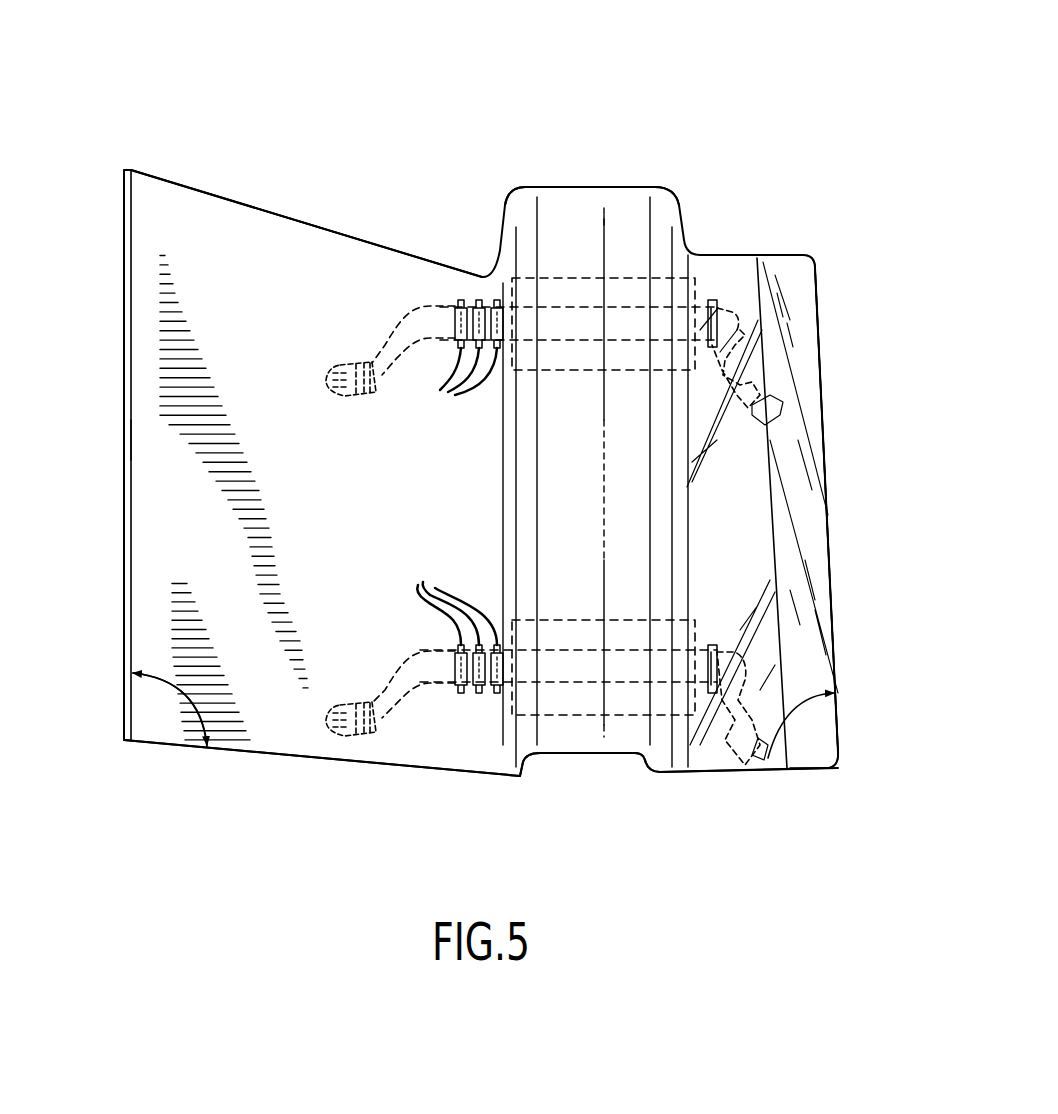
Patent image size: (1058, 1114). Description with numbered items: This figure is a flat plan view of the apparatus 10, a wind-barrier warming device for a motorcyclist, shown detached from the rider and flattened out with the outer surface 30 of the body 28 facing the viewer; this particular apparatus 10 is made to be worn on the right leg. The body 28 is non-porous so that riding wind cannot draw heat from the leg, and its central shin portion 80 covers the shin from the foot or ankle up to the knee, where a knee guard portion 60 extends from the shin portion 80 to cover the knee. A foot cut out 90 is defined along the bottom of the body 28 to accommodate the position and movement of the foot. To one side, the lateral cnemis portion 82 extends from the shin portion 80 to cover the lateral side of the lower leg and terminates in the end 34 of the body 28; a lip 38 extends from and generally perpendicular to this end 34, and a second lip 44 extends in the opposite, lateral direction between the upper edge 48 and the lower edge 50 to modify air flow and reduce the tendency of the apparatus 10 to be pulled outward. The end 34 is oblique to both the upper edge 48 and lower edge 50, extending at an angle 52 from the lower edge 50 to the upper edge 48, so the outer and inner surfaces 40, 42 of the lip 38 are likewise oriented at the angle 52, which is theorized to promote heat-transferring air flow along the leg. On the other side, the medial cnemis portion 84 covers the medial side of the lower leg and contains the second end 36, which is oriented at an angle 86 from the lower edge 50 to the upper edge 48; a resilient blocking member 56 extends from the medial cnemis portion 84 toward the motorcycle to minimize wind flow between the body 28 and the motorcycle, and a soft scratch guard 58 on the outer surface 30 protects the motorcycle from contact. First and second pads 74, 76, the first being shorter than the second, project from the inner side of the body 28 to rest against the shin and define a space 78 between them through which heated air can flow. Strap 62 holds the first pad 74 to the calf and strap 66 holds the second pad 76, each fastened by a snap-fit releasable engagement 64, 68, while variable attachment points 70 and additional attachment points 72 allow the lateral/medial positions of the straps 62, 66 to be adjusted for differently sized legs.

The apparatus 10 is at (730, 73).
The body 28 is at (349, 315).
The outer surface 30 is at (262, 335).
The end 34 is at (129, 170).
The second end 36 is at (834, 620).
The lip 38 is at (133, 205).
The outer surface of the lip 40 is at (124, 240).
The inner surface of the lip 42 is at (136, 240).
The second lip 44 is at (128, 440).
The upper edge 48 is at (334, 230).
The lower edge 50 is at (268, 757).
The angle 52 is at (197, 696).
The blocking member 56 is at (805, 327).
The scratch guard 58 is at (735, 470).
The knee guard portion 60 is at (572, 195).
The strap 62 is at (730, 320).
The snap-fit releasable engagement 64 is at (352, 396).
The strap 66 is at (410, 692).
The snap-fit releasable engagement 68 is at (335, 737).
The variable attachment points 70 is at (457, 380).
The additional attachment points 72 is at (452, 598).
The first pad 74 is at (527, 282).
The second pad 76 is at (668, 708).
The space 78 is at (582, 525).
The shin portion 80 is at (595, 470).
The lateral cnemis portion 82 is at (237, 583).
The medial cnemis portion 84 is at (715, 548).
The angle 86 is at (800, 705).
The foot cut out 90 is at (590, 753).